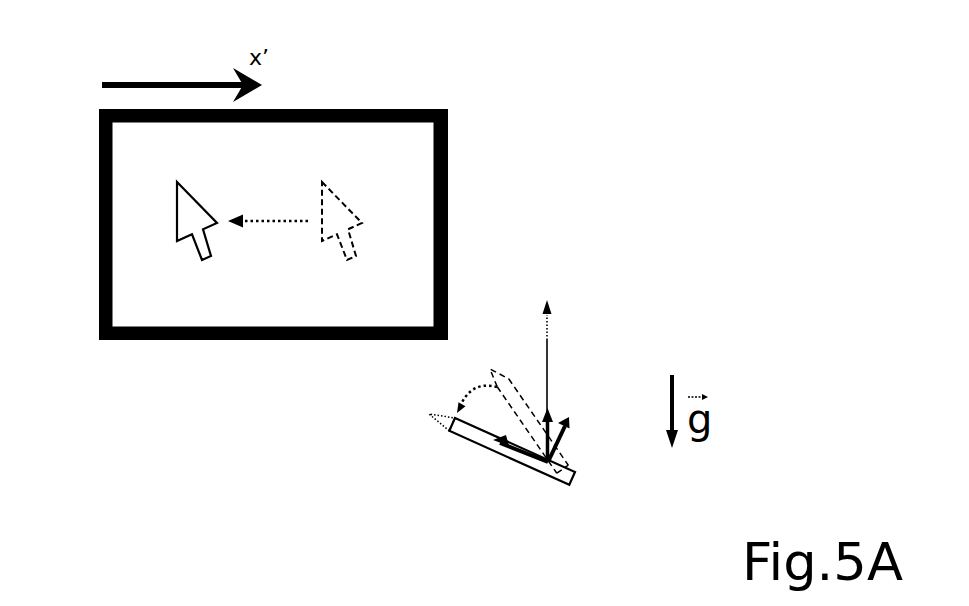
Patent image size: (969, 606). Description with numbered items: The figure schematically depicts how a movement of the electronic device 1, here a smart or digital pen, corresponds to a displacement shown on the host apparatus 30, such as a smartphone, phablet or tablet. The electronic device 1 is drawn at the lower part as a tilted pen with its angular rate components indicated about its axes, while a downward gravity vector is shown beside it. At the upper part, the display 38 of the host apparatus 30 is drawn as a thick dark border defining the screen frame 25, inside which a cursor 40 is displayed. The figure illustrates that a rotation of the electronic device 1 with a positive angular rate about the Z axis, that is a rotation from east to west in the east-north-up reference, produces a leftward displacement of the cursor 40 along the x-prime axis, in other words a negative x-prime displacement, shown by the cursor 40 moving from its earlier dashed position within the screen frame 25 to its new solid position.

The electronic device 1 is at (473, 446).
The screen frame 25 is at (407, 258).
The host apparatus 30 is at (366, 92).
The display 38 is at (99, 171).
The cursor 40 is at (185, 203).